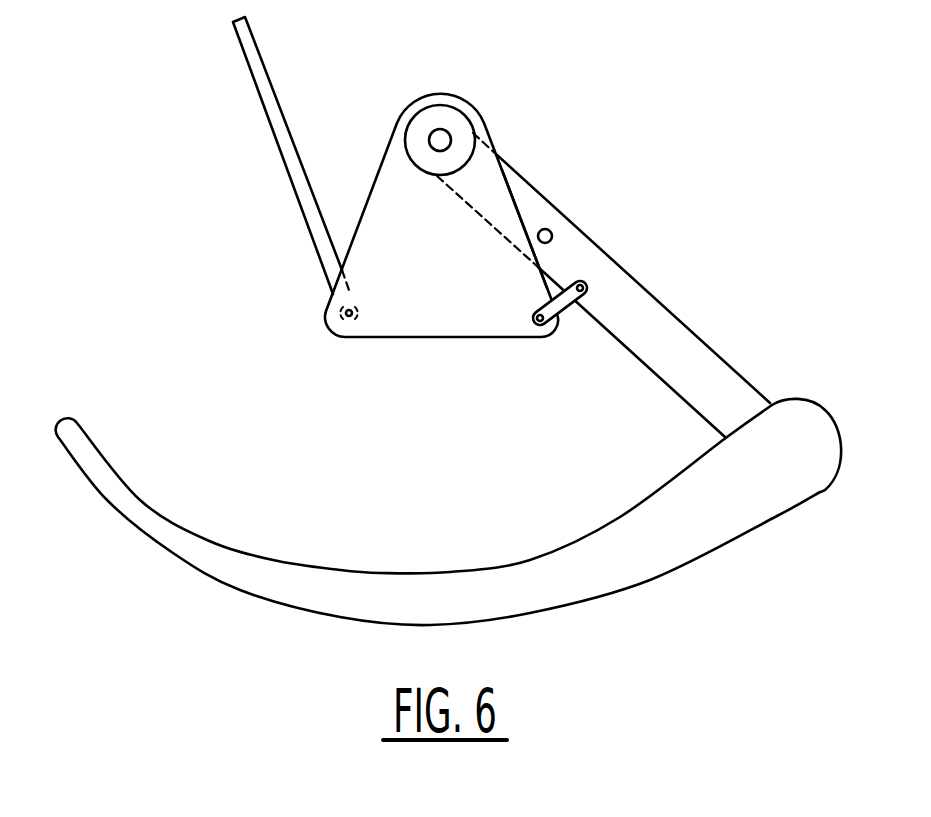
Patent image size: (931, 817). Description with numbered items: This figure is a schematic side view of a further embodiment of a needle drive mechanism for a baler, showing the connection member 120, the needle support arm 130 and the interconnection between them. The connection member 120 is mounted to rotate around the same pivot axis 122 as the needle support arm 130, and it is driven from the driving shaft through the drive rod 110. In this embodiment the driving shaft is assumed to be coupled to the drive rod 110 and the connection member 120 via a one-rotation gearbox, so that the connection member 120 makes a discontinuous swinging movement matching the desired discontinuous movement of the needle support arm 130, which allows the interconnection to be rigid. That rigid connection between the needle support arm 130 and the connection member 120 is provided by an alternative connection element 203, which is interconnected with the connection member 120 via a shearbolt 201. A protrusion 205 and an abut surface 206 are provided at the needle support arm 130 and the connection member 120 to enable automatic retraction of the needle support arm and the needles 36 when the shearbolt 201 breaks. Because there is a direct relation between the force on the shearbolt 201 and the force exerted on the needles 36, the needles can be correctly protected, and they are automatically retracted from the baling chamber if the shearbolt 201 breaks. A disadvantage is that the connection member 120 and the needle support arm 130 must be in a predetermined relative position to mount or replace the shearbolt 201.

The needles 36 is at (407, 583).
The drive rod 110 is at (292, 172).
The connection member 120 is at (437, 288).
The pivot axis 122 is at (453, 127).
The needle support arm 130 is at (708, 375).
The shearbolt 201 is at (535, 324).
The connection element 203 is at (584, 283).
The protrusion 205 is at (552, 232).
The abut surface 206 is at (523, 213).